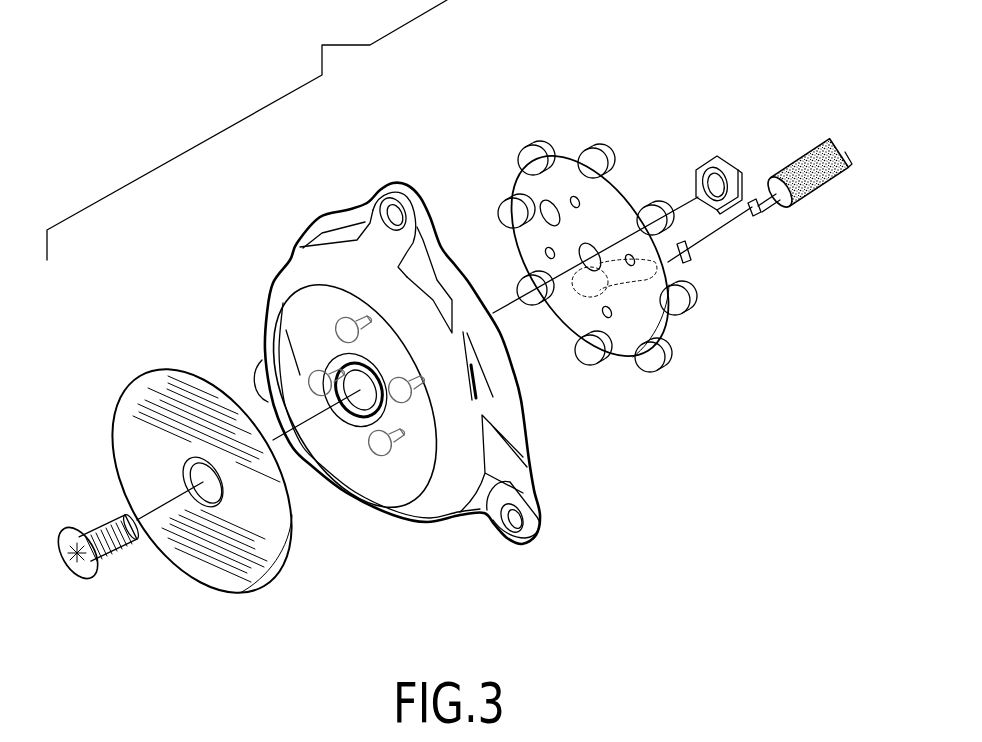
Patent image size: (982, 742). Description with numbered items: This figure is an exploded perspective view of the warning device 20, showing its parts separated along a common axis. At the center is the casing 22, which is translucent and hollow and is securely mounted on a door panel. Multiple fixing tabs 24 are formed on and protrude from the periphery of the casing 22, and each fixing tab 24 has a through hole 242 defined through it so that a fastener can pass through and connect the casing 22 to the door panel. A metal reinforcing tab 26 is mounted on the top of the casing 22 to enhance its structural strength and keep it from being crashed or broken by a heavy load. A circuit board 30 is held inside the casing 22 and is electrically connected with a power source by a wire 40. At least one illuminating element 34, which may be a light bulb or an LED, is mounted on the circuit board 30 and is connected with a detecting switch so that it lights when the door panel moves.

The warning device 20 is at (258, 234).
The casing 22 is at (291, 280).
The fixing tab 24 is at (549, 514).
The through hole 242 is at (510, 520).
The metal reinforcing tab 26 is at (150, 405).
The circuit board 30 is at (677, 337).
The illuminating element 34 is at (683, 307).
The wire 40 is at (814, 158).